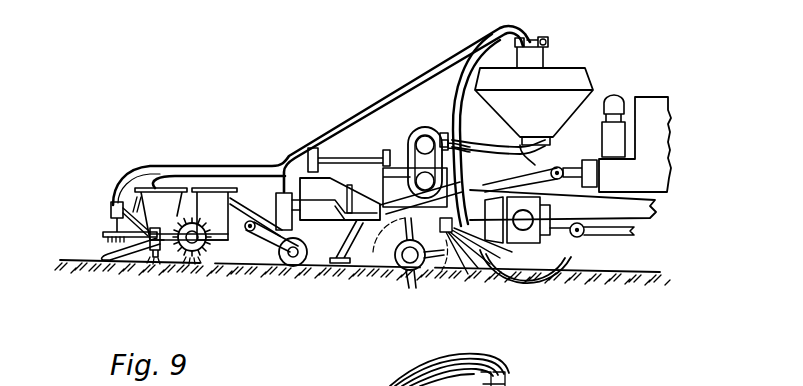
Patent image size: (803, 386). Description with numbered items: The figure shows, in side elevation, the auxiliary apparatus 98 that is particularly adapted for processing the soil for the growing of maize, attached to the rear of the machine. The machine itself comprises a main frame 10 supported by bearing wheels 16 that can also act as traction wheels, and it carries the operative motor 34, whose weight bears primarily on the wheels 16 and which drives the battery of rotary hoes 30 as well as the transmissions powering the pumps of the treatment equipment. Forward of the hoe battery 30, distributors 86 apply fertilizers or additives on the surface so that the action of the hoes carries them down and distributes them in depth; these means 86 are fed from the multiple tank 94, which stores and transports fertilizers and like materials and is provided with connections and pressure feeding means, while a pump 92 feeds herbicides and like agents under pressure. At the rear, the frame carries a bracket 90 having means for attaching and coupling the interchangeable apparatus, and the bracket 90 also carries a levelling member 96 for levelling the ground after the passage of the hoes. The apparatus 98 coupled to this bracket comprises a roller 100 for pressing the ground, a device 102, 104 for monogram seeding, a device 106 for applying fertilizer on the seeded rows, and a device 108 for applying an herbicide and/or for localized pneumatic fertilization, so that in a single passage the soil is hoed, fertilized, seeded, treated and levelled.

The main frame 10 is at (660, 216).
The bearing wheels 16 is at (553, 248).
The hoe battery 30 is at (434, 284).
The operative motor 34 is at (670, 133).
The distributors 86 is at (484, 262).
The rear bracket 90 is at (318, 178).
The pump 92 is at (426, 127).
The multiple tank 94 is at (568, 106).
The levelling member 96 is at (356, 262).
The apparatus for processing the soil for maize 98 is at (242, 146).
The roller 100 is at (296, 267).
The monogram seeding device 102 is at (208, 192).
The monogram seeding device 104 is at (186, 262).
The fertilizer applying device 106 is at (160, 186).
The herbicide applying device 108 is at (106, 232).